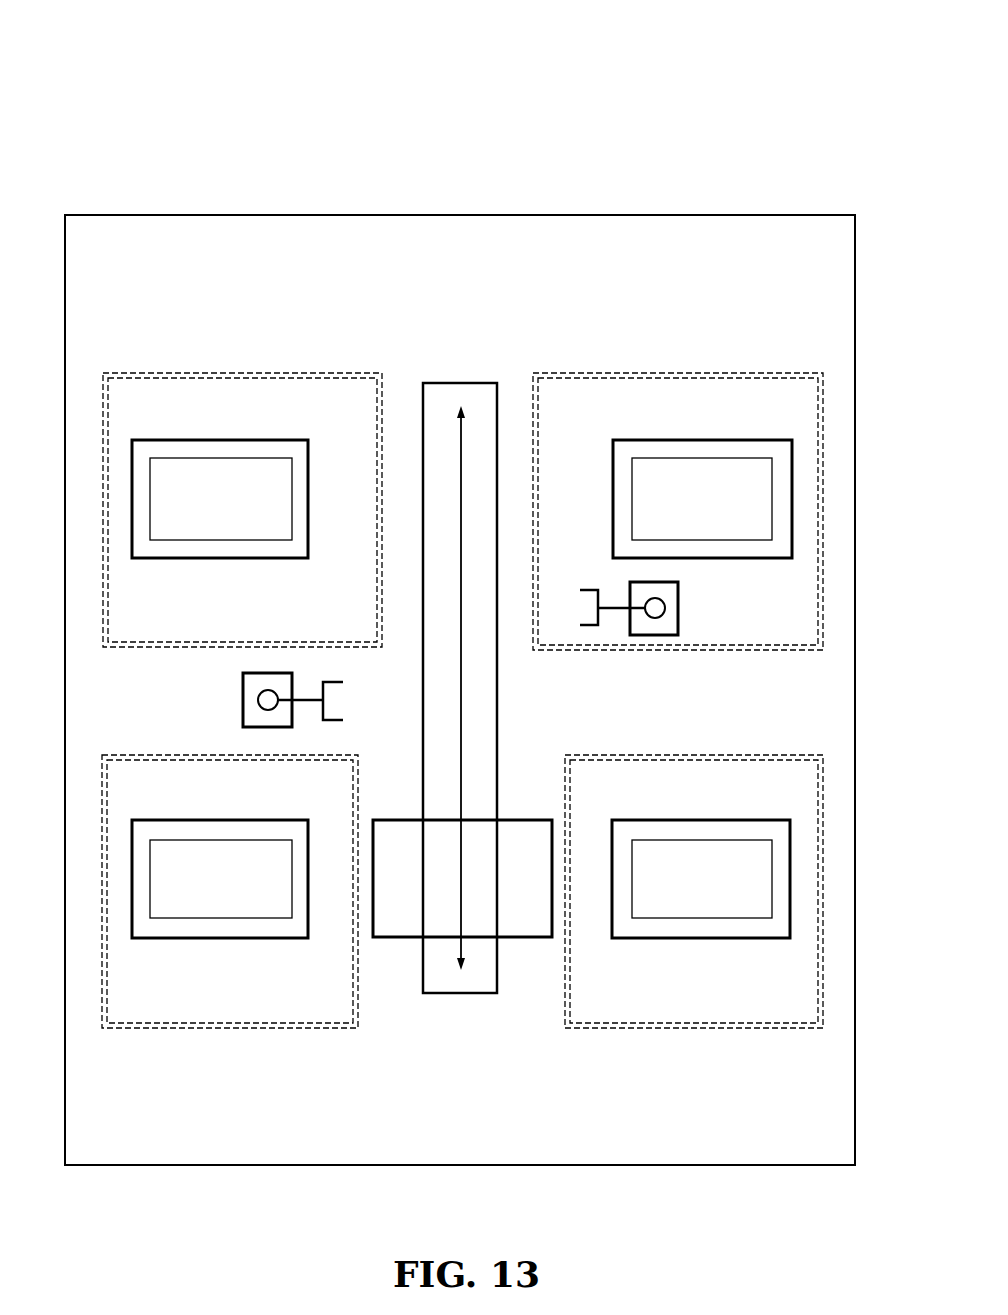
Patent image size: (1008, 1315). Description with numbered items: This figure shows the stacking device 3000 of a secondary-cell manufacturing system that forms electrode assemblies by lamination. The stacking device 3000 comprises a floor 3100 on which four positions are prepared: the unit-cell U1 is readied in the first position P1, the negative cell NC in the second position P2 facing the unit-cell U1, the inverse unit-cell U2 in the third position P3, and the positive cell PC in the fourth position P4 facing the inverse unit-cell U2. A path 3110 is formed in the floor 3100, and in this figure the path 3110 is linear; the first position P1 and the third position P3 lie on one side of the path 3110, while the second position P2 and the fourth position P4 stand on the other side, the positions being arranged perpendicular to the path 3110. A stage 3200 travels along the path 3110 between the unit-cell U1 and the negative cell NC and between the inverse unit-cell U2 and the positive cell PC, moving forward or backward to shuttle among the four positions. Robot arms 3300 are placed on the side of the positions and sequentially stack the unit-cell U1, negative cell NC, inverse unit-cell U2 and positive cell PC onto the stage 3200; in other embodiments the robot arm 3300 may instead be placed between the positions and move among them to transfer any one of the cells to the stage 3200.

The stacking device 3000 is at (497, 146).
The floor 3100 is at (268, 214).
The path 3110 is at (421, 432).
The stage 3200 is at (530, 848).
The robot arm 3300 is at (270, 672).
The Position 1 P1 is at (205, 1029).
The Position 2 P2 is at (720, 1029).
The Position 3 P3 is at (350, 372).
The Position 4 P4 is at (570, 372).
The unit-cell U1 is at (160, 840).
The inverse unit-cell U2 is at (222, 458).
The positive cell PC is at (708, 458).
The negative cell NC is at (702, 840).